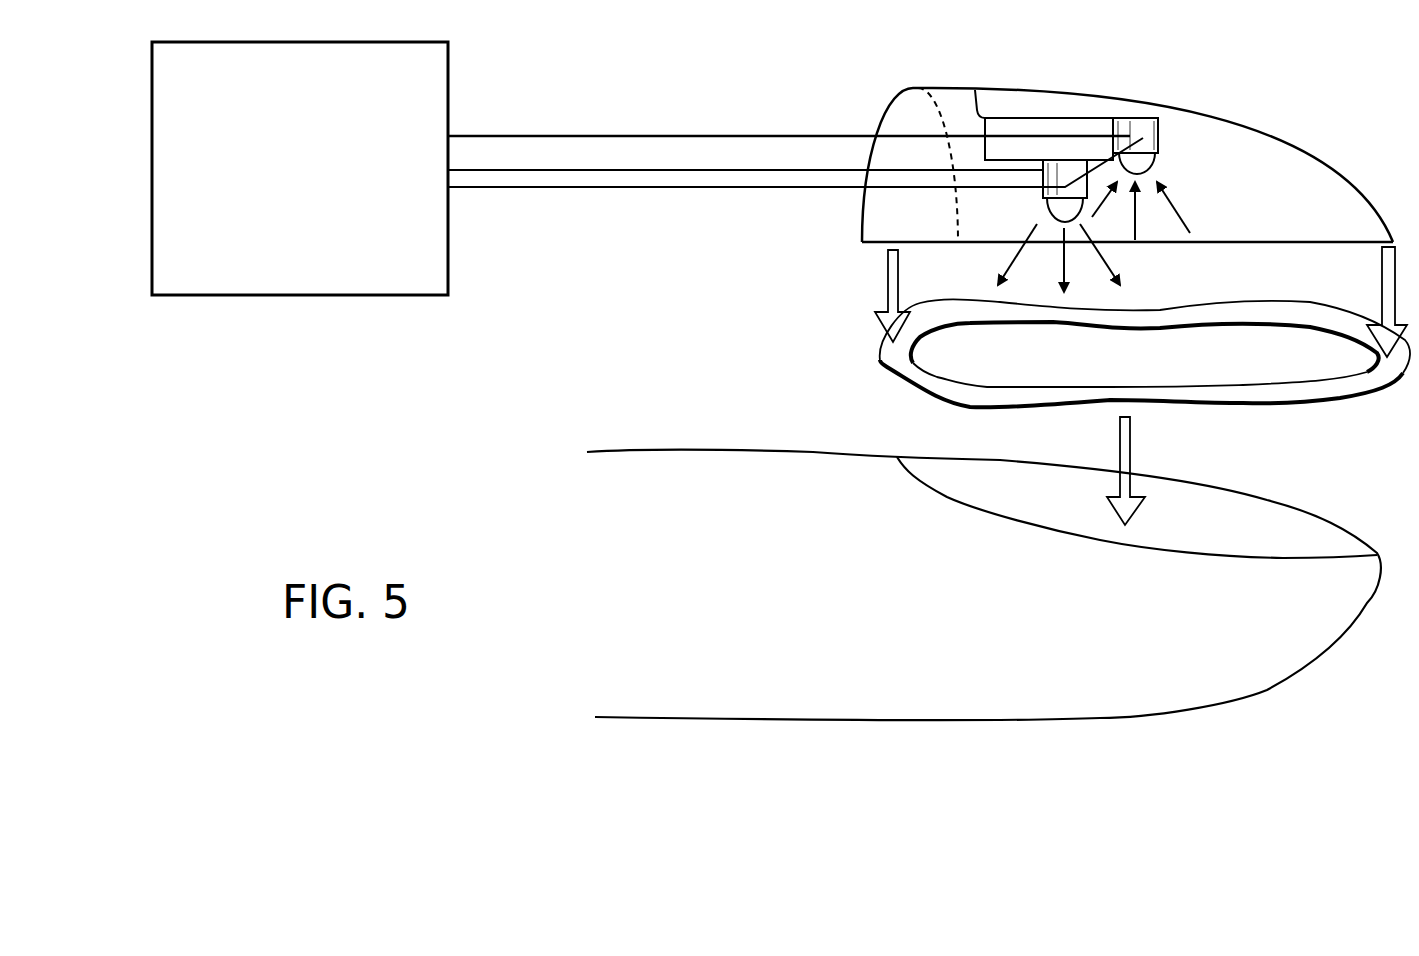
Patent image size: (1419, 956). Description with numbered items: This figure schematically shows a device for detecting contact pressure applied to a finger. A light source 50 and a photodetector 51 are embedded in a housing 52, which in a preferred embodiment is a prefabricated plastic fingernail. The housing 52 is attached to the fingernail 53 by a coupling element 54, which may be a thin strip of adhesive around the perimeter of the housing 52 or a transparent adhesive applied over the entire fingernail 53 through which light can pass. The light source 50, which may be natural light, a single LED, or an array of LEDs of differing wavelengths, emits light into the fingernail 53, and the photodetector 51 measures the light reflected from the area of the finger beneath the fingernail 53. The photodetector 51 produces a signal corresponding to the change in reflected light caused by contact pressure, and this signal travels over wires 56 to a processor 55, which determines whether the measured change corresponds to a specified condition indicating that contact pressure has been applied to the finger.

The light source 50 is at (1053, 210).
The photodetector 51 is at (1143, 125).
The housing 52 is at (1350, 173).
The fingernail 53 is at (1313, 523).
The coupling element 54 is at (888, 357).
The processor 55 is at (337, 298).
The wires 56 is at (785, 133).